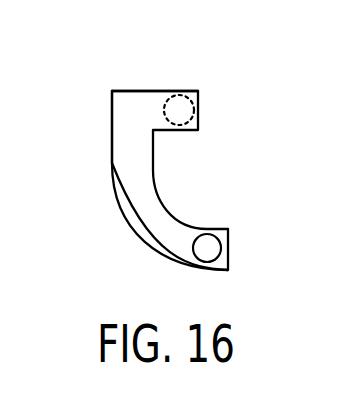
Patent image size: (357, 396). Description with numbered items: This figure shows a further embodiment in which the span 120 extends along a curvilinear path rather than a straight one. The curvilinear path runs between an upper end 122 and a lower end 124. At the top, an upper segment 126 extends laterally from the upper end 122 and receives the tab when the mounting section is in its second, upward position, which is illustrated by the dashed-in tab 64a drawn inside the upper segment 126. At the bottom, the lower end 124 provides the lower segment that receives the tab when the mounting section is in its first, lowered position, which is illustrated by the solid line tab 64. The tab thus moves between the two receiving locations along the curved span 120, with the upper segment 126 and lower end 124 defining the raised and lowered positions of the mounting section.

The span 120 is at (122, 194).
The upper end 122 is at (118, 110).
The lower end 124 is at (168, 246).
The upper segment 126 is at (147, 98).
The tab 64 is at (229, 251).
The tab 64a is at (200, 112).